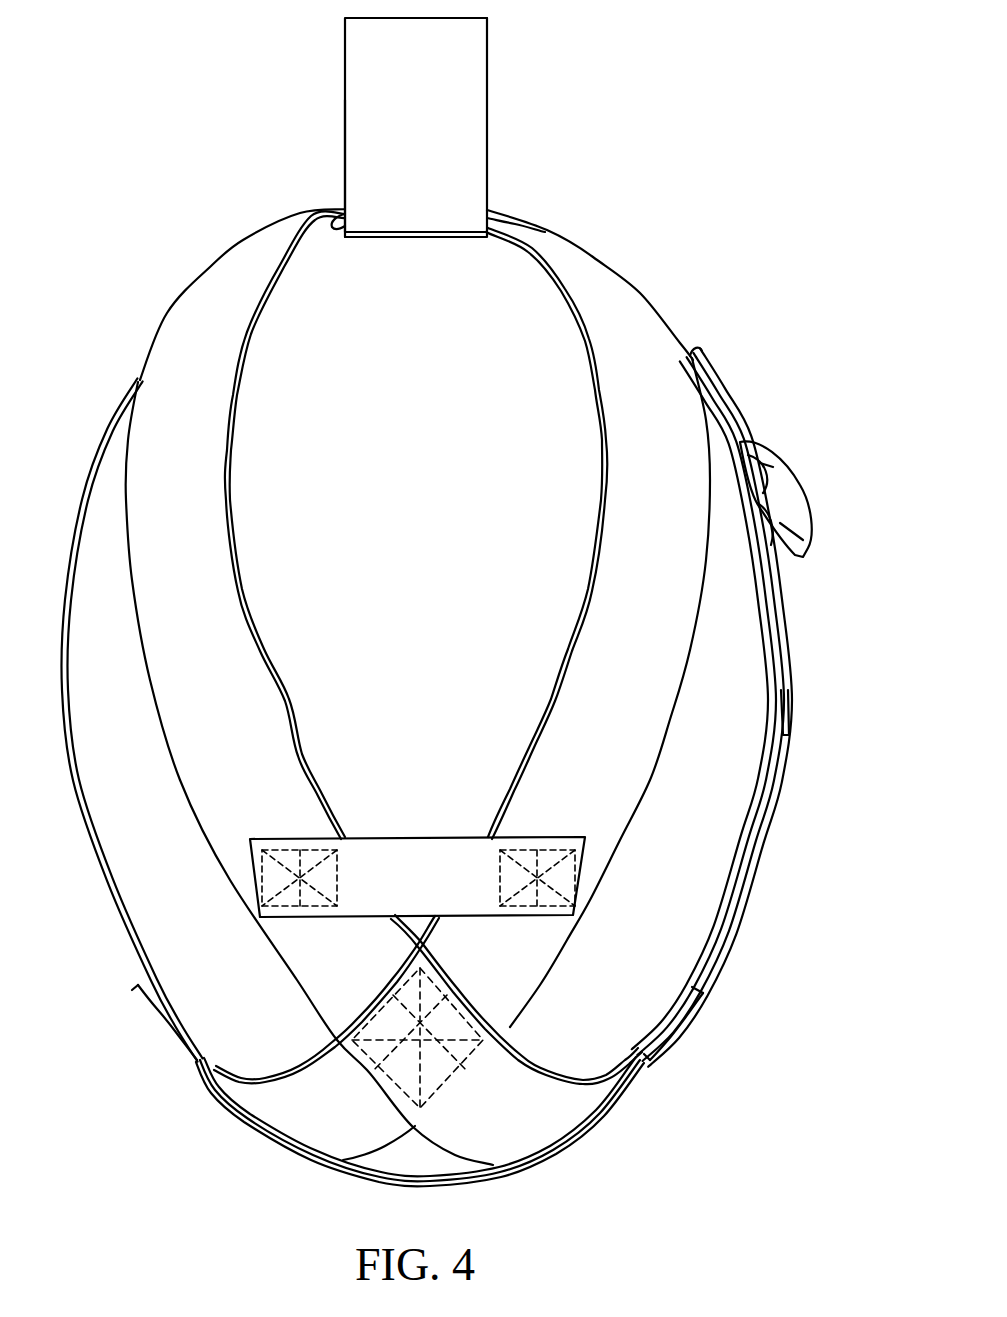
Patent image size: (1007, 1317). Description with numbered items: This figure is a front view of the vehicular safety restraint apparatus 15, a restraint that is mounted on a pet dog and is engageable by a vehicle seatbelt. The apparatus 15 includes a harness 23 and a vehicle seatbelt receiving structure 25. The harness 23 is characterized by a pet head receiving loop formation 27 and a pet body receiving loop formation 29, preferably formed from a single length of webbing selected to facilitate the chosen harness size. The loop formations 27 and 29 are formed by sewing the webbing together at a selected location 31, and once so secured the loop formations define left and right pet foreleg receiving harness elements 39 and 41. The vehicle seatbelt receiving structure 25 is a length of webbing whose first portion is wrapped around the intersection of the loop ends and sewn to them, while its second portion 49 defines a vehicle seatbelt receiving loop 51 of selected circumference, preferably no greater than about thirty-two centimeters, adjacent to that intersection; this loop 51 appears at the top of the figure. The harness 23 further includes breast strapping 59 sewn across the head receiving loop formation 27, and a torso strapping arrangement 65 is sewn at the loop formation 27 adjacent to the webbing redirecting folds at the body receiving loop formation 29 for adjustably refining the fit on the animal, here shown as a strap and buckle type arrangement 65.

The vehicular safety restraint apparatus 15 is at (693, 258).
The harness 23 is at (615, 605).
The vehicle seatbelt receiving structure 25 is at (470, 148).
The pet head receiving loop formation 27 is at (587, 283).
The pet body receiving loop formation 29 is at (718, 930).
The selected location 31 is at (442, 1028).
The left pet foreleg receiving harness element 39 is at (765, 680).
The right pet foreleg receiving harness element 41 is at (147, 683).
The second portion 49 is at (378, 41).
The vehicle seatbelt receiving loop 51 is at (378, 103).
The breast strapping 59 is at (414, 864).
The torso strapping arrangement 65 is at (778, 694).